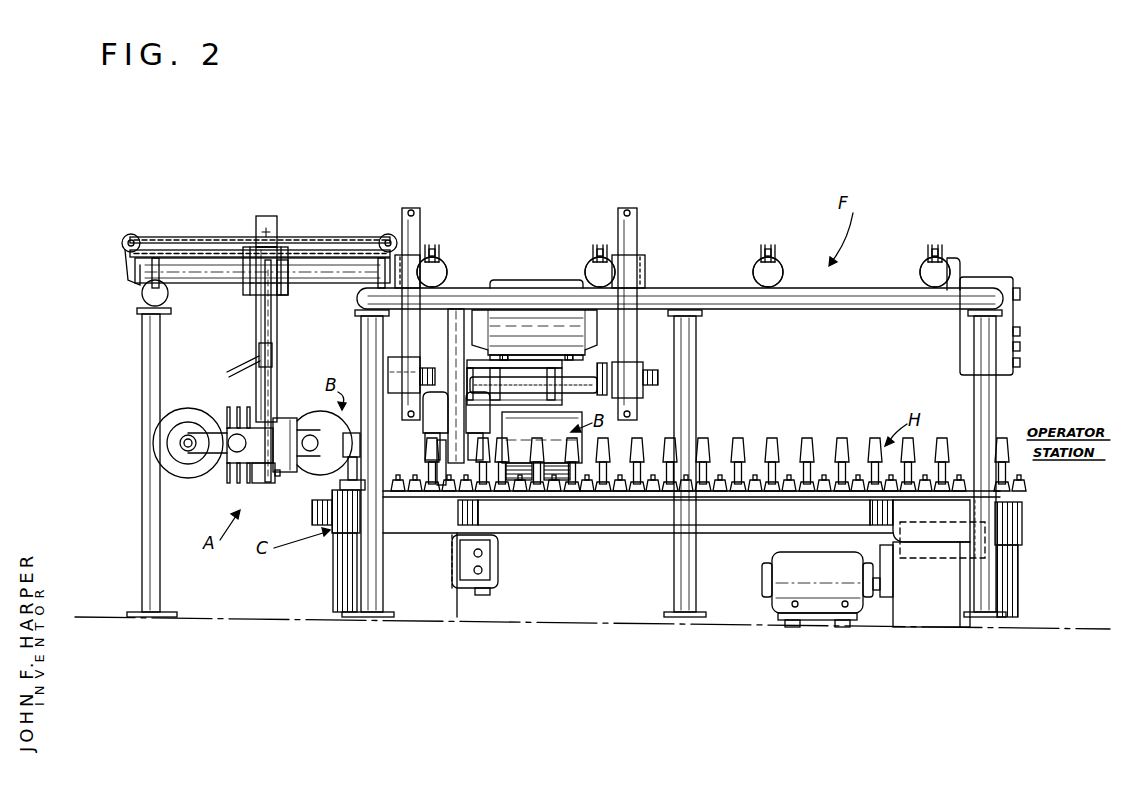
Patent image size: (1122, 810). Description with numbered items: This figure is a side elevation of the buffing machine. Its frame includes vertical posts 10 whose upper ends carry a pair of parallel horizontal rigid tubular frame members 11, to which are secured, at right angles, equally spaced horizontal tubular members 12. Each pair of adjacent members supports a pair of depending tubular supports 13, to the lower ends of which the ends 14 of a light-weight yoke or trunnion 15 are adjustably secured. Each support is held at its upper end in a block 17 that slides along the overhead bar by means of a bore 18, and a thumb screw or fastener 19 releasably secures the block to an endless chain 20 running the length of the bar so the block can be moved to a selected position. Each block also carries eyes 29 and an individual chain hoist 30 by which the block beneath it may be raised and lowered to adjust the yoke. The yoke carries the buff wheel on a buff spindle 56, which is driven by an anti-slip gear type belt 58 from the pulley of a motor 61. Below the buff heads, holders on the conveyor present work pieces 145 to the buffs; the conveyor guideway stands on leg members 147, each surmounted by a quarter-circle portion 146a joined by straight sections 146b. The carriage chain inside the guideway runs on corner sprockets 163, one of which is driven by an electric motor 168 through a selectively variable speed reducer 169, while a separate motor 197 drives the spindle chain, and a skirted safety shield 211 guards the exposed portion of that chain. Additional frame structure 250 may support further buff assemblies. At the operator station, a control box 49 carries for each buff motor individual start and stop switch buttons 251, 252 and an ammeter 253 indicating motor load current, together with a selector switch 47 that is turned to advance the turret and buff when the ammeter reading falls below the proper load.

The vertical posts 10 is at (145, 346).
The horizontal rigid tubular frame members 11 is at (872, 300).
The horizontal parallel tubular members 12 is at (446, 275).
The depending tubular supports 13 is at (417, 213).
The yoke ends 14 is at (386, 372).
The yoke or trunnion 15 is at (584, 368).
The block 17 is at (405, 258).
The bore 18 is at (290, 294).
The thumb screw or fastener 19 is at (280, 228).
The endless chain 20 is at (334, 241).
The eyes 29 is at (266, 262).
The chain hoist 30 is at (258, 356).
The selector switch 47 is at (1022, 331).
The control box 49 is at (998, 280).
The buff spindle 56 is at (312, 455).
The anti-slip gear type belt 58 is at (440, 462).
The motor 61 is at (513, 282).
The work pieces 145 is at (363, 449).
The quarter-circle guideway portion 146a is at (350, 520).
The straight guideway sections 146b is at (748, 507).
The standard or leg members 147 is at (345, 590).
The sprockets 163 is at (949, 528).
The electric motor 168 is at (830, 576).
The selectively variable speed reducer 169 is at (918, 560).
The motor 197 is at (500, 560).
The skirted safety shield 211 is at (312, 515).
The additional frame structure 250 is at (92, 297).
The start switch button 251 is at (1022, 346).
The stop switch button 252 is at (1022, 362).
The ammeter 253 is at (1022, 294).